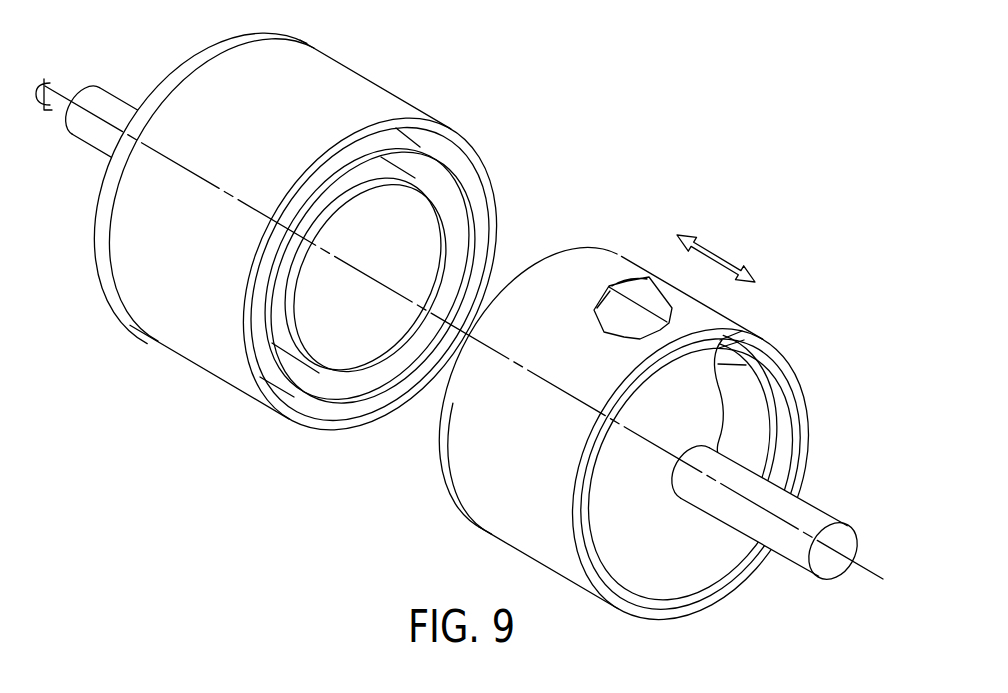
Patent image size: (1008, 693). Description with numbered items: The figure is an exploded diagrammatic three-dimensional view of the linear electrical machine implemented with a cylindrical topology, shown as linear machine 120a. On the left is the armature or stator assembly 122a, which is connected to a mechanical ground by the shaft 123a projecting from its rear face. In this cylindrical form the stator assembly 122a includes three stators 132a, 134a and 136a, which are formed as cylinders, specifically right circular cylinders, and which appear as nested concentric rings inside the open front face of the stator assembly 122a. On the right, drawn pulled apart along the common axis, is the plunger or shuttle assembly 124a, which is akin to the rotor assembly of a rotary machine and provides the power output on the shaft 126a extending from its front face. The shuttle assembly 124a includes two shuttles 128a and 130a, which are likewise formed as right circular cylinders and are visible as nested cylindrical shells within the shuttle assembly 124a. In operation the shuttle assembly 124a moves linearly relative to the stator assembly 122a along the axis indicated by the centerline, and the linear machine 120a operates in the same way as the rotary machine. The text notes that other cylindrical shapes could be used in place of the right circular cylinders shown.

The linear machine 120a is at (740, 88).
The stator assembly 122a is at (378, 79).
The shaft 123a is at (105, 101).
The shuttle assembly 124a is at (748, 317).
The shaft 126a is at (807, 515).
The shuttle 128a is at (785, 349).
The shuttle 130a is at (777, 400).
The stator 132a is at (478, 163).
The stator 134a is at (467, 205).
The stator 136a is at (447, 240).